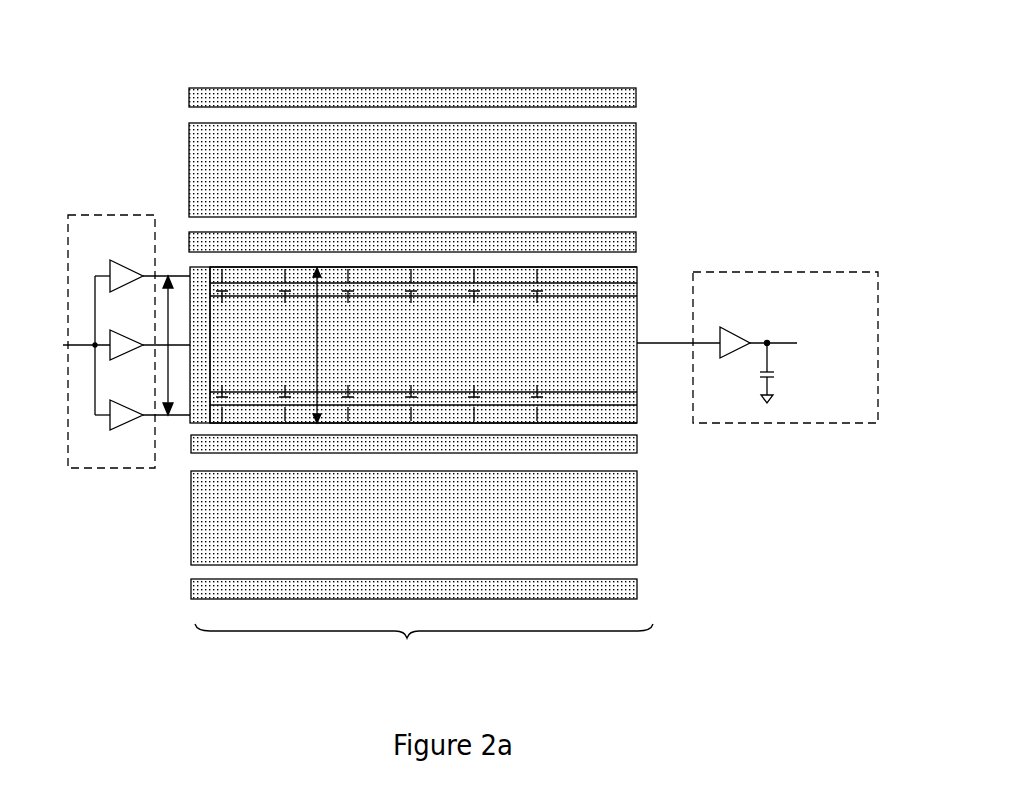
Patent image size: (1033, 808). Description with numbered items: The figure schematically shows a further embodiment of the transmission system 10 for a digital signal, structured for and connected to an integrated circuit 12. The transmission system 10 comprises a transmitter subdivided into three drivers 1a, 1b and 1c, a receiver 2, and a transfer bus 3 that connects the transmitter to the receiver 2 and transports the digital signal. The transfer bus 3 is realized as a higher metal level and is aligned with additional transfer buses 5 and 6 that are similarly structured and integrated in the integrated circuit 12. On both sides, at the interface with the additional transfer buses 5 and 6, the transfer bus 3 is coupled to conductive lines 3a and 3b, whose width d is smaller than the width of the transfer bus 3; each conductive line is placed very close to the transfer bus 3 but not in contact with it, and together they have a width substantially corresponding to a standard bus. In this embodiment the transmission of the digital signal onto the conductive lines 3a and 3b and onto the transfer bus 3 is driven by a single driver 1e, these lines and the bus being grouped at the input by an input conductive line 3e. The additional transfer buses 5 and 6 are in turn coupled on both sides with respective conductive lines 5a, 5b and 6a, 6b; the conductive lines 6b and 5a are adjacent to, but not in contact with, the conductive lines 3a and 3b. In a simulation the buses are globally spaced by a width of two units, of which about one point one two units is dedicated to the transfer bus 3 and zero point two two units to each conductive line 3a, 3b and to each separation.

The transmission system 10 is at (668, 113).
The integrated circuit 12 is at (424, 654).
The conductive line 6a is at (412, 89).
The additional transfer bus 6 is at (412, 170).
The conductive line 6b is at (412, 240).
The first conductive line 3a is at (423, 269).
The transfer bus 3 is at (465, 344).
The second conductive line 3b is at (423, 411).
The input conductive line 3e is at (211, 343).
The conductive line 5a is at (414, 440).
The additional transfer bus 5 is at (414, 518).
The conductive line 5b is at (414, 581).
The first driver 1a is at (144, 260).
The second driver 1b is at (150, 431).
The third driver 1c is at (150, 336).
The single driver 1e is at (68, 257).
The receiver 2 is at (807, 410).
The width of the conductive line d is at (204, 236).